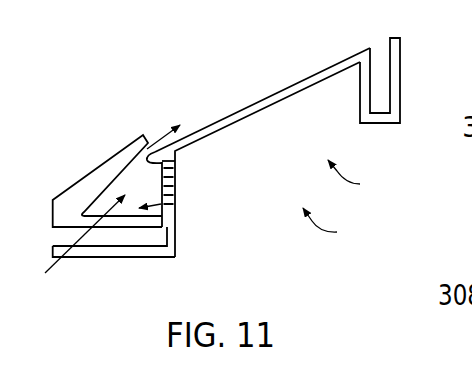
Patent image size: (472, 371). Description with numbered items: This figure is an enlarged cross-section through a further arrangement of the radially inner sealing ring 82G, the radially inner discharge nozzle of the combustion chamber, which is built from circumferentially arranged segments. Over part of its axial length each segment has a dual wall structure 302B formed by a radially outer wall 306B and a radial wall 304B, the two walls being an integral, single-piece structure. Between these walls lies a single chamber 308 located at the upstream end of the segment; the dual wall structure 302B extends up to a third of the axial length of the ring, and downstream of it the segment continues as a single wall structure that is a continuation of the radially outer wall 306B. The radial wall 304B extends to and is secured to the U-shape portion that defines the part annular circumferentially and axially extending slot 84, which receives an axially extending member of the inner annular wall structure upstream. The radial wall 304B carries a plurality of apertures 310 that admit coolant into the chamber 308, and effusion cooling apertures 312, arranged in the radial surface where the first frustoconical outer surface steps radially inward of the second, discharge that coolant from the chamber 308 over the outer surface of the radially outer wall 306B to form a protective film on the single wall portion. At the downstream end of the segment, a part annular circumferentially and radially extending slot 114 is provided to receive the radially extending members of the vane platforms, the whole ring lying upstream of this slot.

The radially outer wall 306B is at (125, 150).
The radial wall 304B is at (178, 158).
The effusion cooling apertures 312 is at (148, 152).
The apertures 310 is at (177, 187).
The circumferentially and radially extending slot 114 is at (385, 73).
The circumferentially and axially extending slot 84 is at (115, 238).
The chamber 308 is at (76, 253).
The radially inner sealing ring 82G is at (370, 182).
The dual wall structure 302B is at (354, 228).